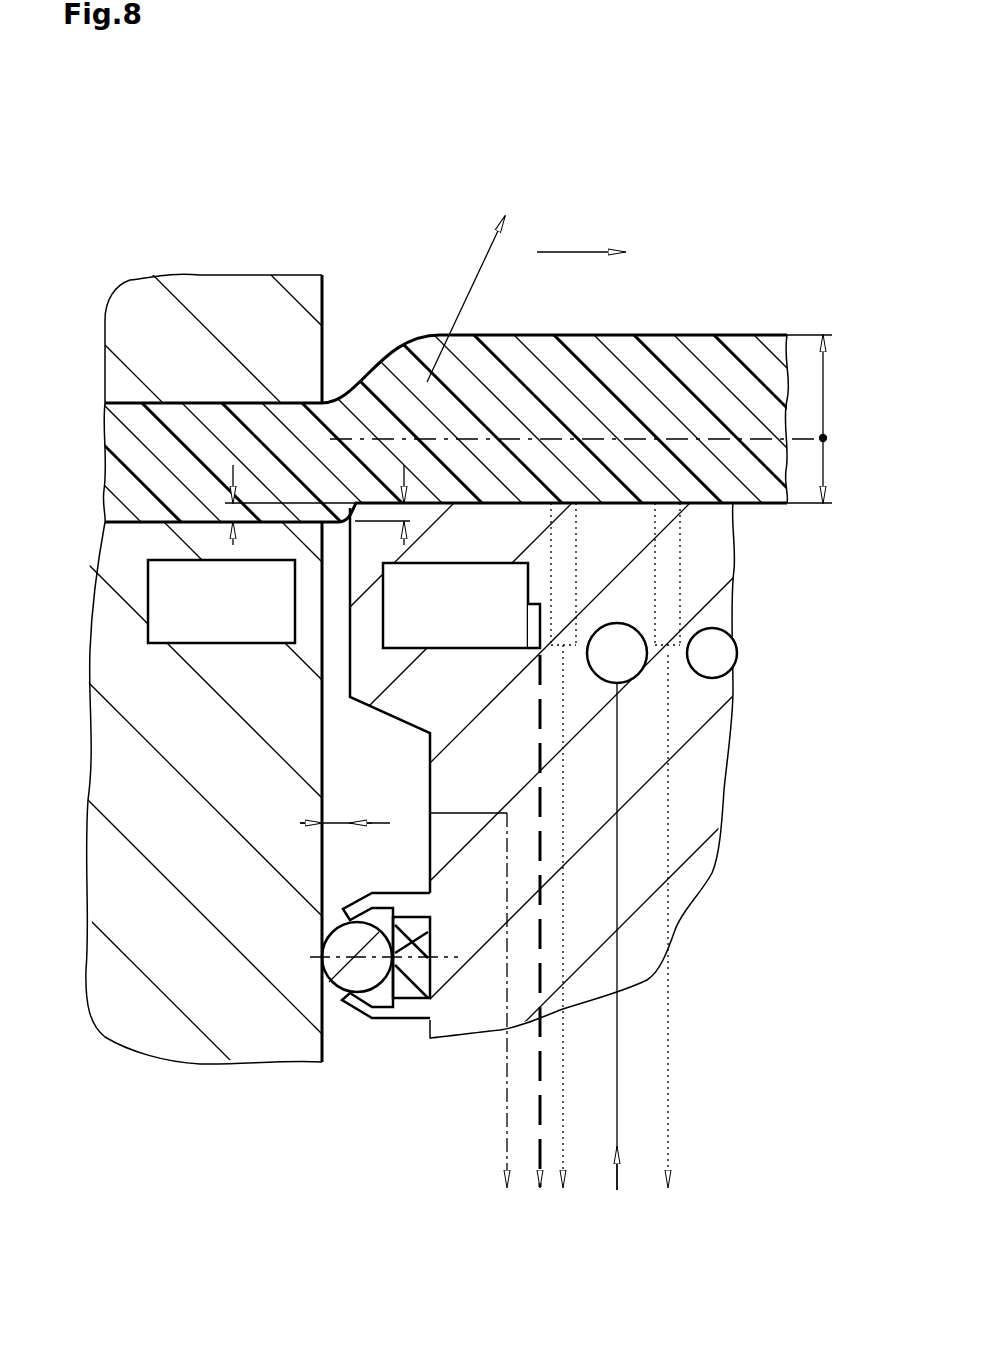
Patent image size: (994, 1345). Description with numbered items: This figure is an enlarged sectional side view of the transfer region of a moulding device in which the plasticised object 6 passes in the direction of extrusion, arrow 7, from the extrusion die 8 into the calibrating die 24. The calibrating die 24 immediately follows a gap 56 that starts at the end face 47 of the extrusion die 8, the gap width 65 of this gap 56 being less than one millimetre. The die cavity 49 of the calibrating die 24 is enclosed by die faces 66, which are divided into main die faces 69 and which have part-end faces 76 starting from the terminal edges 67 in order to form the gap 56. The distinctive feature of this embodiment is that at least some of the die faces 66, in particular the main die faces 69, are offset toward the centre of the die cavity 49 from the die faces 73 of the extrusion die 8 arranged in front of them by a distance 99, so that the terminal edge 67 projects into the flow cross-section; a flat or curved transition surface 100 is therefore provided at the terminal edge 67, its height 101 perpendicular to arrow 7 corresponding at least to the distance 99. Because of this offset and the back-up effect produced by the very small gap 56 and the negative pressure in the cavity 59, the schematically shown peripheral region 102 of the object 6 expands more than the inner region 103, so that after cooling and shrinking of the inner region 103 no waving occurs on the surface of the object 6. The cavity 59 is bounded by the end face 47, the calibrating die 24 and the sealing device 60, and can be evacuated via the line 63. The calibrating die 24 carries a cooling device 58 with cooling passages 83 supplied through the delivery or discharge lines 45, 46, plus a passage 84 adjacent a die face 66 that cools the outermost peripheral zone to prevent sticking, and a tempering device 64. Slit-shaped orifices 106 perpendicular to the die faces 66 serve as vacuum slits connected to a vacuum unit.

The object 6 is at (757, 330).
The arrow 7 is at (560, 250).
The extrusion die 8 is at (215, 312).
The calibrating die 24 is at (650, 860).
The delivery or discharge line 45 is at (617, 1112).
The delivery or discharge line 46 is at (537, 1063).
The end face 47 is at (325, 300).
The die cavity 49 is at (425, 400).
The gap 56 is at (333, 683).
The cooling device 58 is at (657, 688).
The cavity 59 is at (318, 910).
The sealing device 60 is at (342, 1025).
The line 63 is at (507, 1157).
The tempering device 64 is at (195, 660).
The gap width 65 is at (375, 823).
The die faces 66 is at (823, 438).
The terminal edge 67 is at (355, 505).
The main die faces 69 is at (678, 500).
The die faces 73 is at (183, 517).
The part-end faces 76 is at (322, 612).
The cooling passages 83 is at (715, 680).
The passage 84 is at (461, 645).
The distance 99 is at (232, 470).
The transition surface 100 is at (300, 312).
The height 101 is at (446, 648).
The peripheral region 102 is at (826, 440).
The inner region 103 is at (823, 340).
The slit-shaped orifices 106 is at (680, 557).